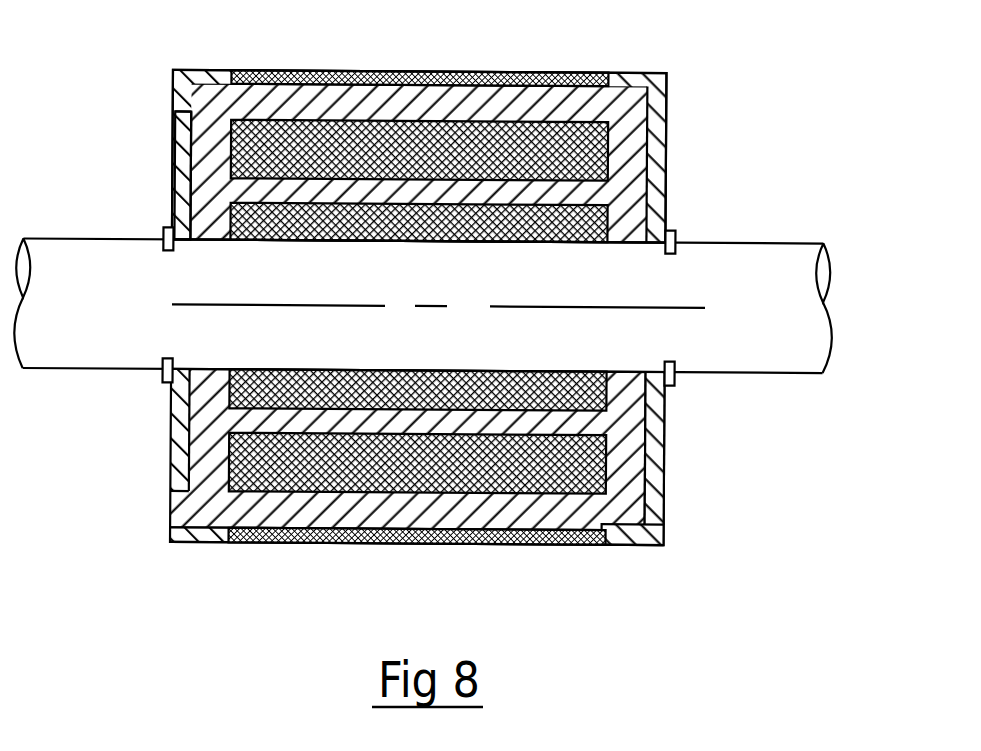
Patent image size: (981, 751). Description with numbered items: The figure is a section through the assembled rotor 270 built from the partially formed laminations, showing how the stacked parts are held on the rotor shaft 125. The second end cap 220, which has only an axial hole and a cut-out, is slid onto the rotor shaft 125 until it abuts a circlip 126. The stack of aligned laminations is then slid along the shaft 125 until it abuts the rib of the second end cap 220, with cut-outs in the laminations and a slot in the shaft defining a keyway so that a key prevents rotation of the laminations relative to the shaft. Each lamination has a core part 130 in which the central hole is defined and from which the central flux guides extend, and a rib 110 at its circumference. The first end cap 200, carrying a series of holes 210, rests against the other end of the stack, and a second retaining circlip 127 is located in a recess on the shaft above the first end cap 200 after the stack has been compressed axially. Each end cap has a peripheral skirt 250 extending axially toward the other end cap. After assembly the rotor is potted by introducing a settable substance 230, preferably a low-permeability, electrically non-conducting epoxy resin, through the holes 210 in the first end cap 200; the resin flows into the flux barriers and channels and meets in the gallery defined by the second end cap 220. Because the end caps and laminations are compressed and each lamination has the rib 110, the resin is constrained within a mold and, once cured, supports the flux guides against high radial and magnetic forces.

The rib 110 is at (500, 536).
The rotor shaft 125 is at (710, 270).
The circlip 126 is at (676, 386).
The second retaining circlip 127 is at (168, 382).
The core part 130 is at (609, 219).
The first end cap 200 is at (196, 74).
The holes 210 is at (226, 116).
The second end cap 220 is at (654, 458).
The settable substance 230 is at (186, 114).
The peripheral skirt 250 is at (614, 539).
The electromagnet assembly 270 is at (686, 101).